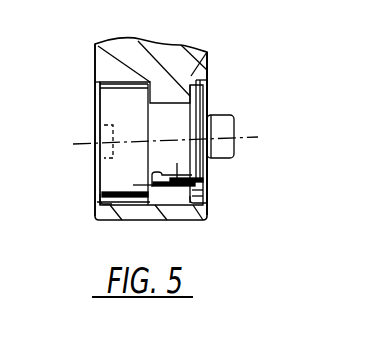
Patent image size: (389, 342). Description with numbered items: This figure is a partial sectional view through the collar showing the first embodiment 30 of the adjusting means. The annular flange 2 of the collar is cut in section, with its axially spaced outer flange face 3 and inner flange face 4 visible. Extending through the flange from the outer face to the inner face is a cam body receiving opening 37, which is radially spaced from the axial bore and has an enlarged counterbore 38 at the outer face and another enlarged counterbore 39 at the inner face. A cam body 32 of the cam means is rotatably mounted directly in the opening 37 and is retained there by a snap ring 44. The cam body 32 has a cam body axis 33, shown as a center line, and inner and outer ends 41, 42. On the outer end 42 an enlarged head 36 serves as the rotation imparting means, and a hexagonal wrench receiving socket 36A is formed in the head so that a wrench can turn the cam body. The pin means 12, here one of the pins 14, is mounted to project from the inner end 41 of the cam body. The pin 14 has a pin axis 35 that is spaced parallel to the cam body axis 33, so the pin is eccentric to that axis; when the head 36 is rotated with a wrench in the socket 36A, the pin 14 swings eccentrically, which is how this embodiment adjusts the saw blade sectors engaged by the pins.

The annular flange 2 is at (163, 102).
The outer flange face 3 is at (95, 44).
The inner flange face 4 is at (208, 54).
The pin means 12 is at (242, 113).
The pin 14 is at (218, 114).
The first embodiment of the adjusting means 30 is at (95, 115).
The cam body 32 is at (172, 186).
The cam body axis 33 is at (247, 141).
The pin axis 35 is at (256, 136).
The enlarged head 36 is at (110, 96).
The hexagonal wrench receiving socket 36A is at (112, 157).
The cam body receiving opening 37 is at (180, 46).
The outer counterbore 38 is at (100, 203).
The inner counterbore 39 is at (208, 200).
The inner end of cam body 41 is at (205, 172).
The outer end of cam body 42 is at (160, 186).
The snap ring 44 is at (206, 187).